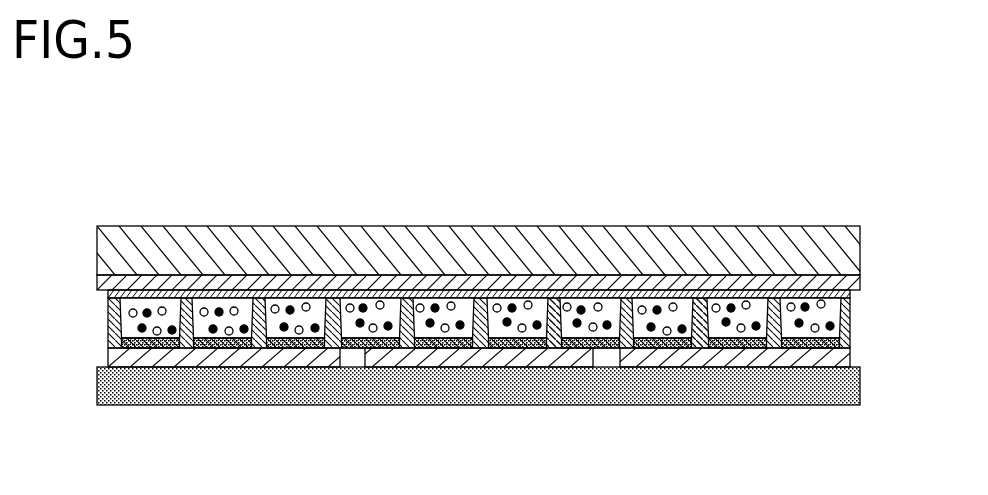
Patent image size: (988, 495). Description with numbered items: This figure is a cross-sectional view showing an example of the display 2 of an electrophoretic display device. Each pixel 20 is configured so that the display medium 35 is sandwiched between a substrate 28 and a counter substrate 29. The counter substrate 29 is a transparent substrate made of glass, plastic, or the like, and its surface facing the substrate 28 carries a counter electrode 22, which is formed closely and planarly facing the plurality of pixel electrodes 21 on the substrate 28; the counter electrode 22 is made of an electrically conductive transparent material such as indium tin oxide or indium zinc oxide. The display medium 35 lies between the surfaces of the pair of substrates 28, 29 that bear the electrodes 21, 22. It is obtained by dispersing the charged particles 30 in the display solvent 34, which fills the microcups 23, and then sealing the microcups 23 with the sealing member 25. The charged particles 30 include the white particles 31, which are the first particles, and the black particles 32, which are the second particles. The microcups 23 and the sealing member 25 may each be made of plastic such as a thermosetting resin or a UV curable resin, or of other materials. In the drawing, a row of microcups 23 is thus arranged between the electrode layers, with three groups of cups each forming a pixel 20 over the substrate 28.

The display 2 is at (785, 171).
The pixel 20 is at (338, 413).
The pixel electrode 21 is at (850, 357).
The counter electrode 22 is at (850, 283).
The microcup 23 is at (553, 300).
The sealing member 25 is at (696, 343).
The substrate 28 is at (852, 385).
The counter substrate 29 is at (848, 252).
The charged particles 30 is at (128, 335).
The white particles 31 is at (451, 302).
The black particles 32 is at (363, 304).
The display solvent 34 is at (209, 305).
The display medium 35 is at (867, 288).